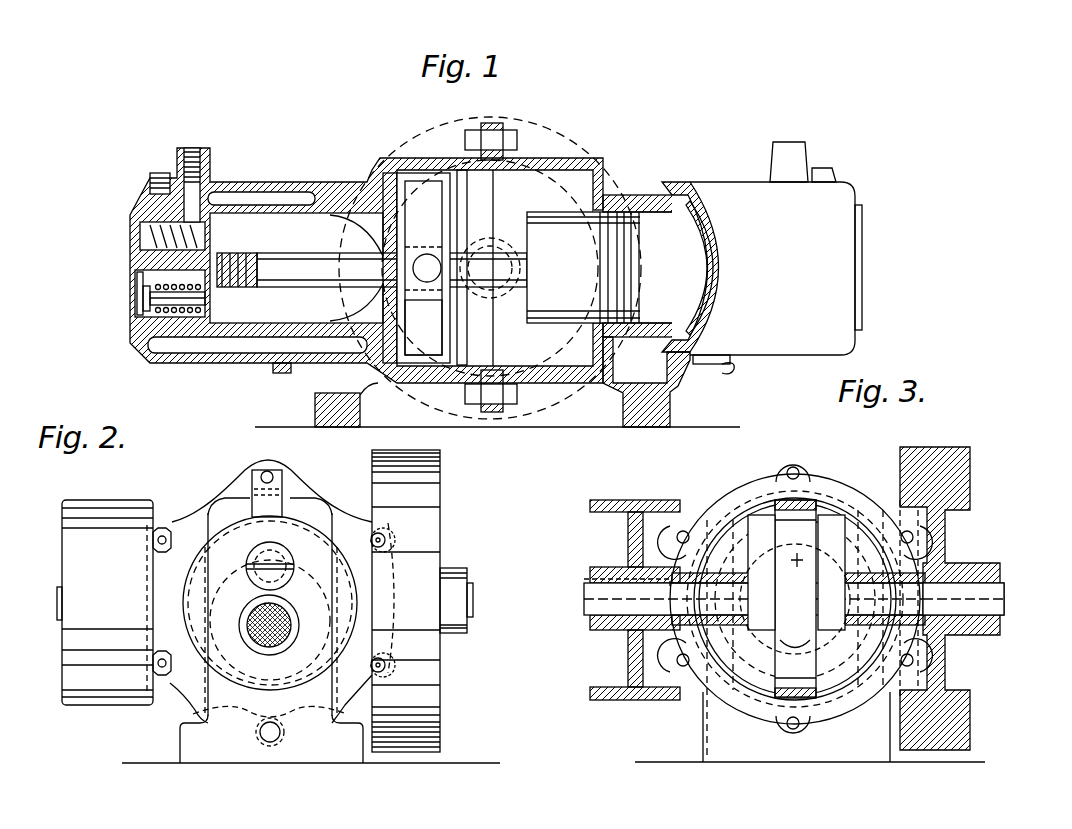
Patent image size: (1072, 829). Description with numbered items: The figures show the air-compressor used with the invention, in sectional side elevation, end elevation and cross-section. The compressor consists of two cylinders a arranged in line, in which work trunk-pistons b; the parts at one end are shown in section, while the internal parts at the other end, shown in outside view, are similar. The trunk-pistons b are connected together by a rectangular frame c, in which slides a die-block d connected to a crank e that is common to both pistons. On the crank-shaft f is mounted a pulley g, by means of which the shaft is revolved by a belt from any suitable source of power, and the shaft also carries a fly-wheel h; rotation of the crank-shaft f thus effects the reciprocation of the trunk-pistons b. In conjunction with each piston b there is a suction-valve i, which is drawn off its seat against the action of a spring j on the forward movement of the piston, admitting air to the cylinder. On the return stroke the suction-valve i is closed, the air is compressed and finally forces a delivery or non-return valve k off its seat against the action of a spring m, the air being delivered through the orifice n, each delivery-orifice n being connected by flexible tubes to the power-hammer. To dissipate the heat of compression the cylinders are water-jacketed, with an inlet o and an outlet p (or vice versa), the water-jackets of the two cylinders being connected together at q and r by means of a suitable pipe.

In FIG. 1, the cylinder a is at (263, 181).
In FIG. 2, the cylinder a is at (311, 611).
In FIG. 1, the trunk-piston b is at (350, 213).
In FIG. 1, the rectangular frame c is at (405, 230).
In FIG. 3, the rectangular frame c is at (808, 502).
In FIG. 1, the die-block d is at (433, 247).
In FIG. 3, the die-block d is at (795, 599).
In FIG. 1, the crank e is at (438, 292).
In FIG. 3, the crank e is at (795, 644).
In FIG. 1, the crank-shaft f is at (500, 245).
In FIG. 2, the crank-shaft f is at (473, 598).
In FIG. 3, the crank-shaft f is at (607, 605).
In FIG. 1, the pulley g is at (561, 186).
In FIG. 2, the pulley g is at (114, 602).
In FIG. 3, the pulley g is at (600, 528).
In FIG. 1, the fly-wheel h is at (623, 345).
In FIG. 2, the fly-wheel h is at (425, 538).
In FIG. 3, the fly-wheel h is at (955, 485).
In FIG. 1, the suction-valve i is at (207, 297).
In FIG. 1, the spring j is at (132, 326).
In FIG. 1, the delivery or non-return valve k is at (222, 237).
In FIG. 1, the spring m is at (131, 240).
In FIG. 1, the delivery-orifice n is at (183, 148).
In FIG. 1, the inlet o is at (160, 173).
In FIG. 1, the outlet p is at (825, 167).
In FIG. 1, the water-jacket connection q is at (280, 366).
In FIG. 1, the water-jacket connection r is at (713, 372).